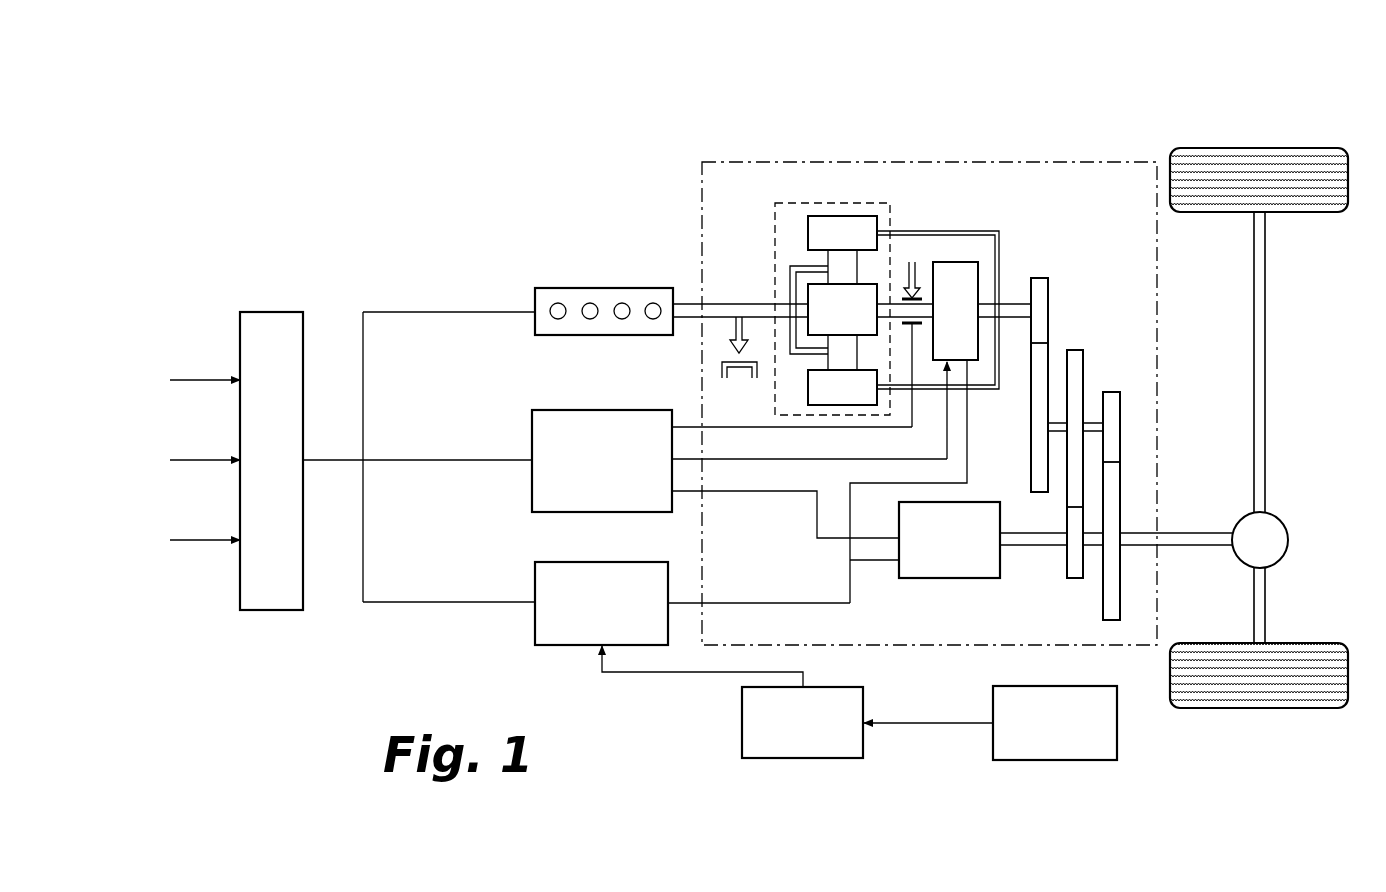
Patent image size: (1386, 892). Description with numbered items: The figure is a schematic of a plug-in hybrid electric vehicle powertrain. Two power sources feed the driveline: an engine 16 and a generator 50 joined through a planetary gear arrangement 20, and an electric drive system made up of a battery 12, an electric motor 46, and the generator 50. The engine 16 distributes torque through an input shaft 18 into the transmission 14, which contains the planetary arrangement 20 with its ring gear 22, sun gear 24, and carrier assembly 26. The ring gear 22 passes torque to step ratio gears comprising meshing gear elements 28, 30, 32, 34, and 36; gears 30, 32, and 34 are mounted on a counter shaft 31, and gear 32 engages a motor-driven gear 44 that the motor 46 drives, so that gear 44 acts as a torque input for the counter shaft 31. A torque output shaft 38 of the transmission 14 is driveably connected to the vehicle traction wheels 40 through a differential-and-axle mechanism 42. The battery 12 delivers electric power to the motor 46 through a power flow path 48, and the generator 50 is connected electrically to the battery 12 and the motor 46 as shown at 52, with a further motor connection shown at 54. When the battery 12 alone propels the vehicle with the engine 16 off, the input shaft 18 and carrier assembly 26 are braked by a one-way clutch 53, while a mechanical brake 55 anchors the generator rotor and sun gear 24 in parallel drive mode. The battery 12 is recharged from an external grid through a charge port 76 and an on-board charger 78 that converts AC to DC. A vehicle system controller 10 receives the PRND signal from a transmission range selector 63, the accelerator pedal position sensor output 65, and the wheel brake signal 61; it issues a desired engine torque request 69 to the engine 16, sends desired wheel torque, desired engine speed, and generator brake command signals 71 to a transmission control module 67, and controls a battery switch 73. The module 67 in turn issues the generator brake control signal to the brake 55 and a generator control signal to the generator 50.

The vehicle system controller 10 is at (273, 312).
The battery 12 is at (605, 562).
The transmission 14 is at (897, 645).
The engine 16 is at (560, 288).
The input shaft 18 is at (690, 304).
The planetary gear arrangement 20 is at (898, 223).
The ring gear 22 is at (808, 224).
The sun gear 24 is at (808, 300).
The carrier assembly 26 is at (792, 270).
The gear element 28 is at (1048, 295).
The gear element 30 is at (1031, 458).
The counter shaft 31 is at (1093, 422).
The gear element 32 is at (1078, 350).
The gear element 34 is at (1112, 392).
The gear element 36 is at (1120, 502).
The torque output shaft 38 is at (1178, 533).
The vehicle traction wheels 40 is at (1260, 148).
The differential-and-axle mechanism 42 is at (1288, 540).
The motor-driven gear 44 is at (1075, 578).
The electric motor 46 is at (920, 578).
The power flow path 48 is at (757, 603).
The generator 50 is at (978, 285).
The generator electrical connection 52 is at (862, 483).
The one-way clutch 53 is at (722, 370).
The motor power line 54 is at (862, 560).
The mechanical brake 55 is at (906, 282).
The wheel brake signal 61 is at (200, 546).
The transmission range selector 63 is at (200, 386).
The accelerator pedal position sensor output 65 is at (200, 466).
The transmission control module 67 is at (618, 410).
The desired engine torque request 69 is at (433, 312).
The desired wheel torque, desired engine speed, and generator brake command signals 71 is at (433, 460).
The battery switch 73 is at (433, 602).
The charge port 76 is at (1055, 760).
The on-board charger 78 is at (803, 758).